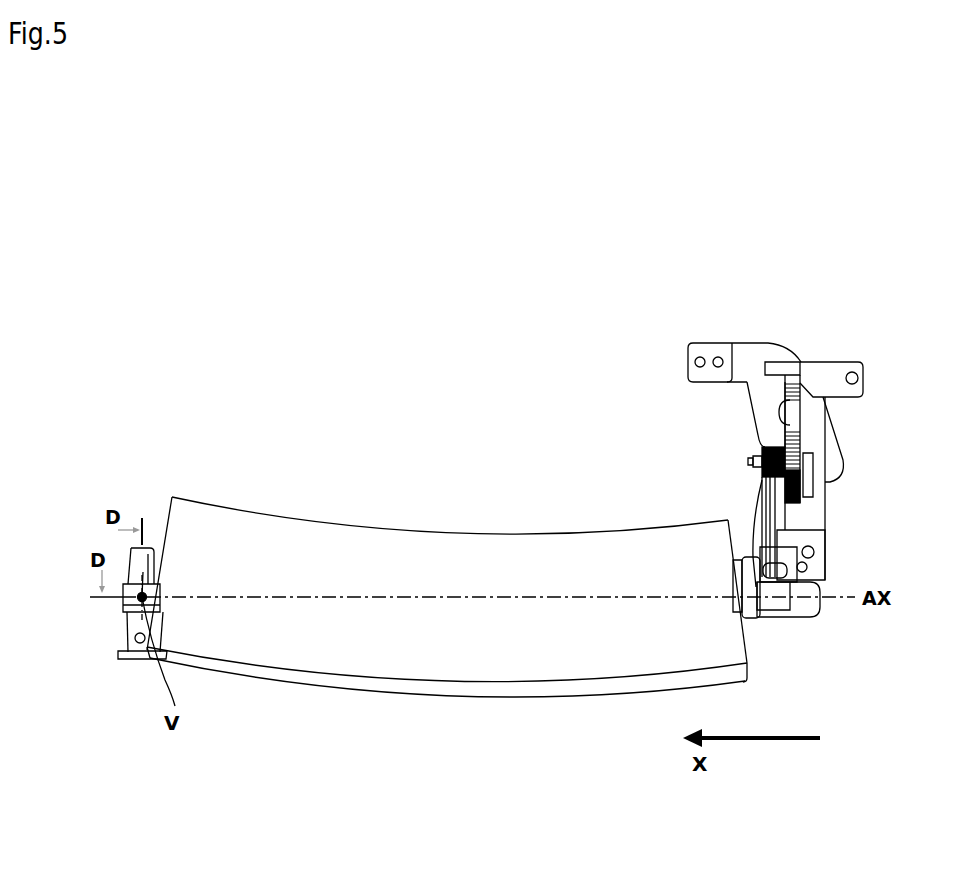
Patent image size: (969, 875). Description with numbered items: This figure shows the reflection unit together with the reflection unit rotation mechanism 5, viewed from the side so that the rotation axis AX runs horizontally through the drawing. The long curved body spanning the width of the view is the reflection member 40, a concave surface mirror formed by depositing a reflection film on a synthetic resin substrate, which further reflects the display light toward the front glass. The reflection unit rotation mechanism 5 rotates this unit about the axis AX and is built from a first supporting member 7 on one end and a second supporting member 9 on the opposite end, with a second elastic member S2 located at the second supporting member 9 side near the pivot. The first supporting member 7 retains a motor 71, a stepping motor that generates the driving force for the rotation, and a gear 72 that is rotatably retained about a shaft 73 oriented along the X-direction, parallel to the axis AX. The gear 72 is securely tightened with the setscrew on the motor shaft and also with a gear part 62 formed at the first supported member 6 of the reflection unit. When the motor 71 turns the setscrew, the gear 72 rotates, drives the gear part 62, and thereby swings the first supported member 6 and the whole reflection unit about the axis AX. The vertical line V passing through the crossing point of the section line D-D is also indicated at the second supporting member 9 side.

The reflection unit rotation mechanism 5 is at (623, 446).
The first supported member 6 is at (777, 597).
The first supporting member 7 is at (820, 505).
The second supporting member 9 is at (132, 630).
The reflection member 40 is at (508, 668).
The gear part 62 is at (765, 481).
The motor 71 is at (765, 410).
The gear 72 is at (762, 448).
The shaft 73 is at (750, 461).
The second elastic member S2 is at (128, 604).